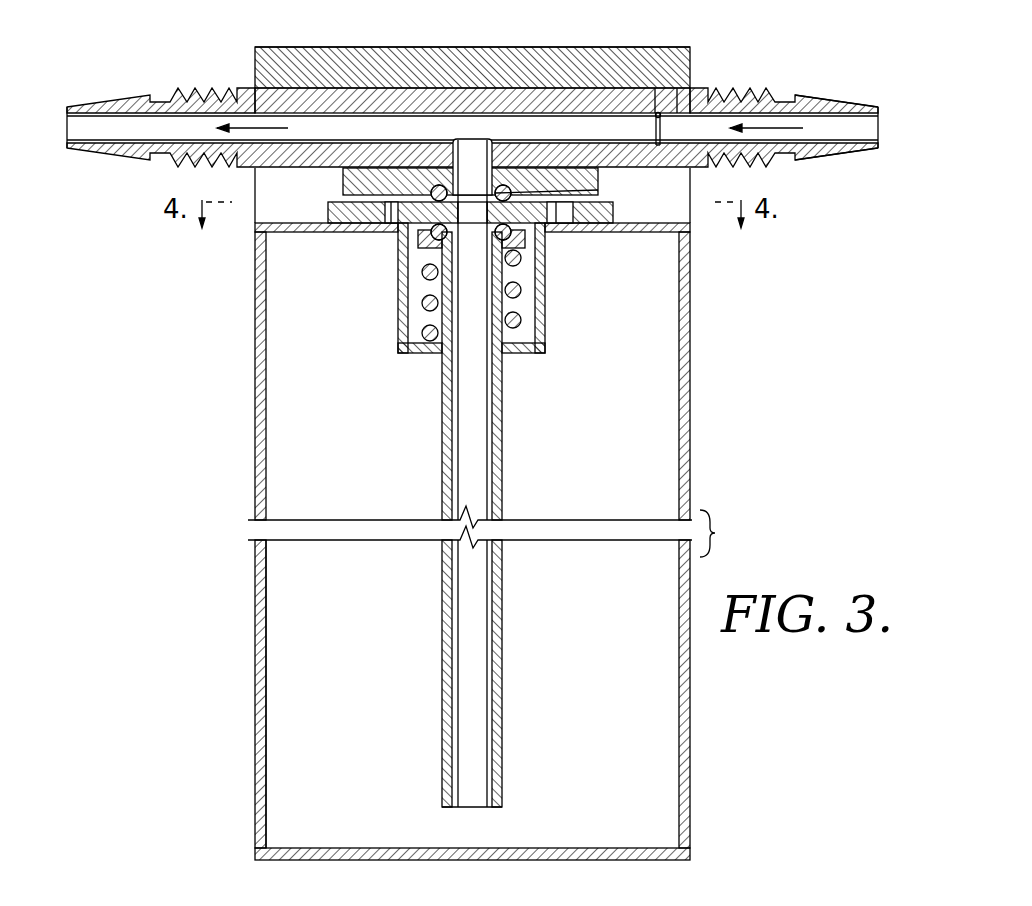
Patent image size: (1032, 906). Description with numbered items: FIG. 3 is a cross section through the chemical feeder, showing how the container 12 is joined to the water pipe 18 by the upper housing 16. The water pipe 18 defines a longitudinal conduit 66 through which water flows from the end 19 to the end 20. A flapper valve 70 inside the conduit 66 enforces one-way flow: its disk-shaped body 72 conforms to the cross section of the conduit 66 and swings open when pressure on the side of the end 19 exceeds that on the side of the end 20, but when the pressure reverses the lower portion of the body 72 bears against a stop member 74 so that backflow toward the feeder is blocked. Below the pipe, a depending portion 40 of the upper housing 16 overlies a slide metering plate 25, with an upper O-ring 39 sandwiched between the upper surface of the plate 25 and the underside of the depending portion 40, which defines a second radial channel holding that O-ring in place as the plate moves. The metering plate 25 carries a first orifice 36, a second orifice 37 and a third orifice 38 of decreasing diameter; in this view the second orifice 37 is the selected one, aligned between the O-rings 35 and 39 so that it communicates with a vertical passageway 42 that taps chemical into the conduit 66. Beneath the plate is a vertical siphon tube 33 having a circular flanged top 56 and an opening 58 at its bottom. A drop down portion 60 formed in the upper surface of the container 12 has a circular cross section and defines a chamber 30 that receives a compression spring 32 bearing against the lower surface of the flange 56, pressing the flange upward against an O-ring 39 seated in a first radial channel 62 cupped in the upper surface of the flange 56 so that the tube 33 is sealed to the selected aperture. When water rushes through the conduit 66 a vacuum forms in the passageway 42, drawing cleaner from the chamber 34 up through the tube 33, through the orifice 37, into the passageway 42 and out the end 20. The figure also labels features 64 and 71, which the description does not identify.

The container 12 is at (255, 488).
The upper housing 16 is at (587, 47).
The water pipe 18 is at (692, 88).
The end 19 is at (878, 135).
The end 20 is at (66, 140).
The metering plate 25 is at (612, 213).
The chamber 30 is at (527, 353).
The compression spring 32 is at (523, 291).
The siphon tube 33 is at (502, 477).
The chamber 34 is at (668, 777).
The O-ring 35 is at (435, 226).
The first orifice 36 is at (568, 223).
The second orifice 37 is at (471, 218).
The third orifice 38 is at (358, 228).
The O-ring 39 is at (512, 195).
The depending portion 40 is at (343, 176).
The vertical passageway 42 is at (474, 147).
The circular flanged top 56 is at (521, 248).
The opening 58 is at (483, 807).
The drop down portion 60 is at (527, 340).
The first radial channel 62 is at (490, 262).
The O-ring 64 is at (437, 185).
The longitudinal conduit 66 is at (833, 130).
The flapper valve 70 is at (690, 50).
The flow restrictor 71 is at (655, 130).
The body 72 is at (657, 97).
The stop member 74 is at (663, 138).